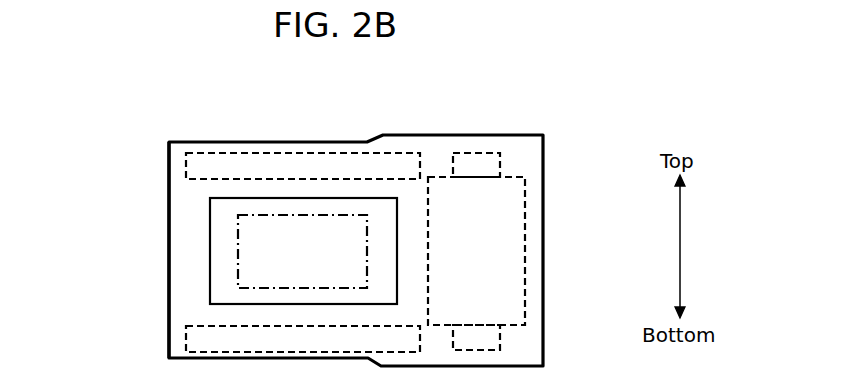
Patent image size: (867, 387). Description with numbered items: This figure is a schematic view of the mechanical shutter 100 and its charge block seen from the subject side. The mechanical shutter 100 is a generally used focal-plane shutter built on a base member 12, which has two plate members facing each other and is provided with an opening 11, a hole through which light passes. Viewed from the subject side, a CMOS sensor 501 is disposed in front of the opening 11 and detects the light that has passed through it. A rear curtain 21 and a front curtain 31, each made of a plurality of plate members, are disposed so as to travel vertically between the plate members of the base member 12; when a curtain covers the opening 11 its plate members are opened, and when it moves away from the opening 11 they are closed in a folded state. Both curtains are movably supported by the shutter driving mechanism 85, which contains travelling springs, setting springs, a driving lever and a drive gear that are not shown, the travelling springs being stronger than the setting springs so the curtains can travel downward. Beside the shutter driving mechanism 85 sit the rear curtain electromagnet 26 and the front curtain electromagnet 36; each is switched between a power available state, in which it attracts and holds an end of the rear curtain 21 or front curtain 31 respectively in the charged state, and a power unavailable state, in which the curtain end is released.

The mechanical shutter 100 is at (268, 123).
The base member 12 is at (168, 191).
The rear curtain 21 is at (186, 167).
The front curtain 31 is at (186, 340).
The opening 11 is at (210, 222).
The CMOS sensor 501 is at (238, 250).
The rear curtain electromagnet 26 is at (500, 168).
The front curtain electromagnet 36 is at (500, 337).
The shutter driving mechanism 85 is at (525, 244).